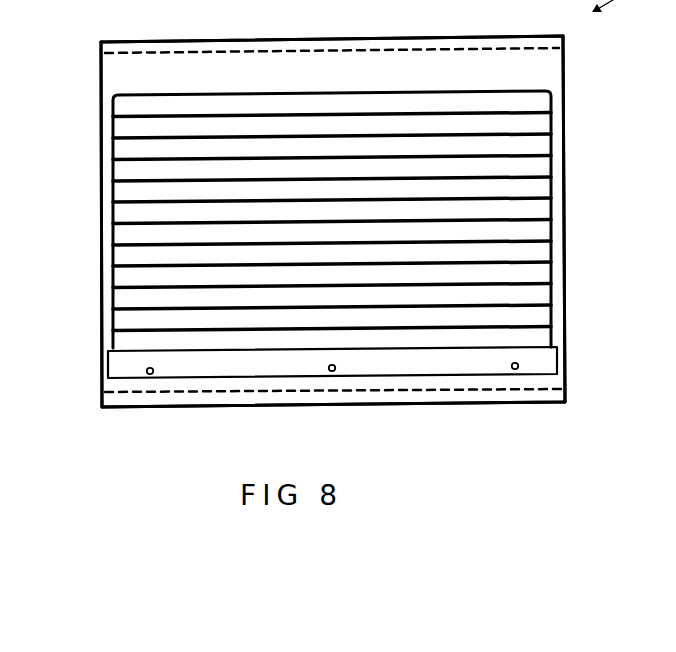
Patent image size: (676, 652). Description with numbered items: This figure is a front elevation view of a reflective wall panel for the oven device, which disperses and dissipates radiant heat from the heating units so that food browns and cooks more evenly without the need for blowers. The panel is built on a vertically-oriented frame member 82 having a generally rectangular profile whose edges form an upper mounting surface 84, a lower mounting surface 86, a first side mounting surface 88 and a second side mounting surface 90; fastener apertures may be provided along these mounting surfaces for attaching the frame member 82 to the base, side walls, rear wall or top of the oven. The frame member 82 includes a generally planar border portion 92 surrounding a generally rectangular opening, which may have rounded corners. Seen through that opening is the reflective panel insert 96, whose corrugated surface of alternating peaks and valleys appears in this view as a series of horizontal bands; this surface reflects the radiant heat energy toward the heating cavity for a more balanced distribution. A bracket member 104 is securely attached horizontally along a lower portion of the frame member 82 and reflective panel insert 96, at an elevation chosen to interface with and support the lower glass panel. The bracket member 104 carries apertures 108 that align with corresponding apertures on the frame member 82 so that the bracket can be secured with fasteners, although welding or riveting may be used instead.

The frame member 82 is at (115, 83).
The upper mounting surface 84 is at (162, 38).
The lower mounting surface 86 is at (317, 410).
The first side mounting surface 88 is at (564, 218).
The second side mounting surface 90 is at (100, 215).
The border portion 92 is at (551, 90).
The reflective panel insert 96 is at (532, 145).
The bracket member 104 is at (115, 367).
The apertures 108 is at (154, 373).